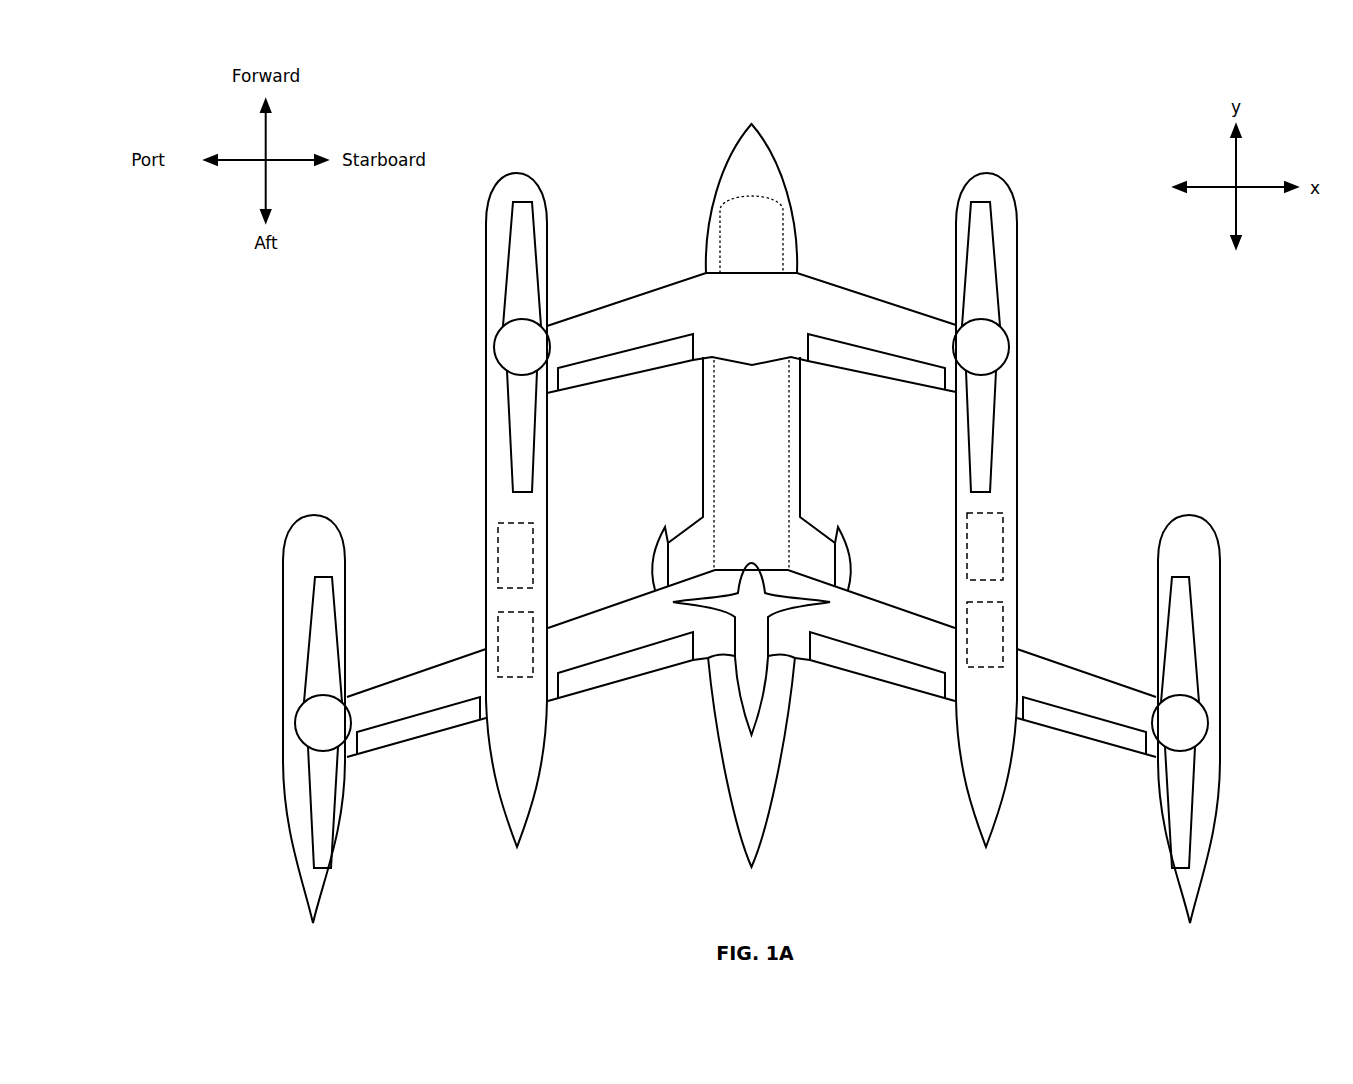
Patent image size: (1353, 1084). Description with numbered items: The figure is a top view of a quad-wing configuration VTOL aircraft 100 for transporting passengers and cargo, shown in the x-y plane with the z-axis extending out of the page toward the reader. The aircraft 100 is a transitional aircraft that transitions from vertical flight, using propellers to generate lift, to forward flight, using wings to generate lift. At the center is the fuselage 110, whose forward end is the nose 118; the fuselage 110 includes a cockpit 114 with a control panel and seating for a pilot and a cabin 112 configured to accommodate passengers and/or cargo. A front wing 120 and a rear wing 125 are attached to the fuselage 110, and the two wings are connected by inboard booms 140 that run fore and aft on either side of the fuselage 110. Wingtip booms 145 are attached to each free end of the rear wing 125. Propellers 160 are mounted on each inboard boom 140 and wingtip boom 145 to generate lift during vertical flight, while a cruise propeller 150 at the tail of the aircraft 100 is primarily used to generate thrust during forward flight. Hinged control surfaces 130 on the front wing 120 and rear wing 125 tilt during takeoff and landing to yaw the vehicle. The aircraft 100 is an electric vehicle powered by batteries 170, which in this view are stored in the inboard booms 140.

The VTOL aircraft 100 is at (741, 495).
The fuselage 110 is at (703, 445).
The cabin 112 is at (763, 405).
The cockpit 114 is at (763, 218).
The nose 118 is at (757, 138).
The front wing 120 is at (657, 290).
The rear wing 125 is at (1052, 677).
The hinged control surfaces 130 is at (413, 728).
The inboard booms 140 is at (507, 742).
The wingtip booms 145 is at (1192, 886).
The cruise propeller 150 is at (755, 667).
The propellers 160 is at (1255, 718).
The batteries 170 is at (498, 558).